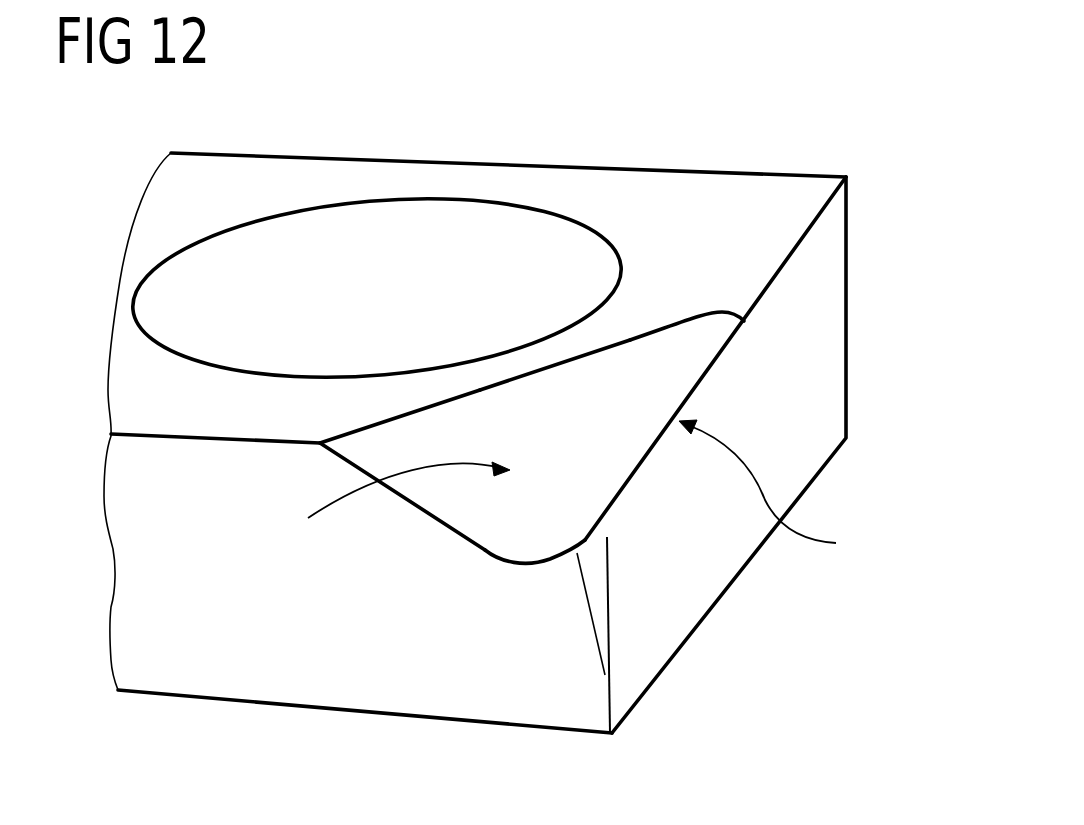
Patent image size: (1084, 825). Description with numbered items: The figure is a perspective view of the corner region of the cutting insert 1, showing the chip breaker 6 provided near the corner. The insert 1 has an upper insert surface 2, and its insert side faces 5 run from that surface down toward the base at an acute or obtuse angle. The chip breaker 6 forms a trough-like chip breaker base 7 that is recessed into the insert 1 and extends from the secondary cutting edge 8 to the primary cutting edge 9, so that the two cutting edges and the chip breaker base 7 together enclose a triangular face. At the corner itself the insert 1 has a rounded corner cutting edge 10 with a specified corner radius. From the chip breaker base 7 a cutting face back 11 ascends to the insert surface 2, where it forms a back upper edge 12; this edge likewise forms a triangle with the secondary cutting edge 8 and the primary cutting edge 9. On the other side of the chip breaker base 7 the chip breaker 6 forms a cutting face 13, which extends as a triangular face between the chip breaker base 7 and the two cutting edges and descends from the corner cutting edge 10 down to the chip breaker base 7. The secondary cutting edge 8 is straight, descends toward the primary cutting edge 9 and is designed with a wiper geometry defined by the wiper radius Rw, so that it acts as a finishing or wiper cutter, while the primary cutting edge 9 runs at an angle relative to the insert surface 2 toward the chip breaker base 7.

The insert 1 is at (815, 303).
The insert surface 2 is at (223, 395).
The insert side faces 5 is at (682, 563).
The chip breaker 6 is at (399, 504).
The chip breaker base 7 is at (508, 567).
The secondary cutting edge 8 is at (720, 328).
The primary cutting edge 9 is at (400, 507).
The corner cutting edge 10 is at (592, 550).
The cutting face back 11 is at (503, 437).
The back upper edge 12 is at (497, 437).
The cutting face 13 is at (600, 505).
The wiper radius Rw is at (782, 499).